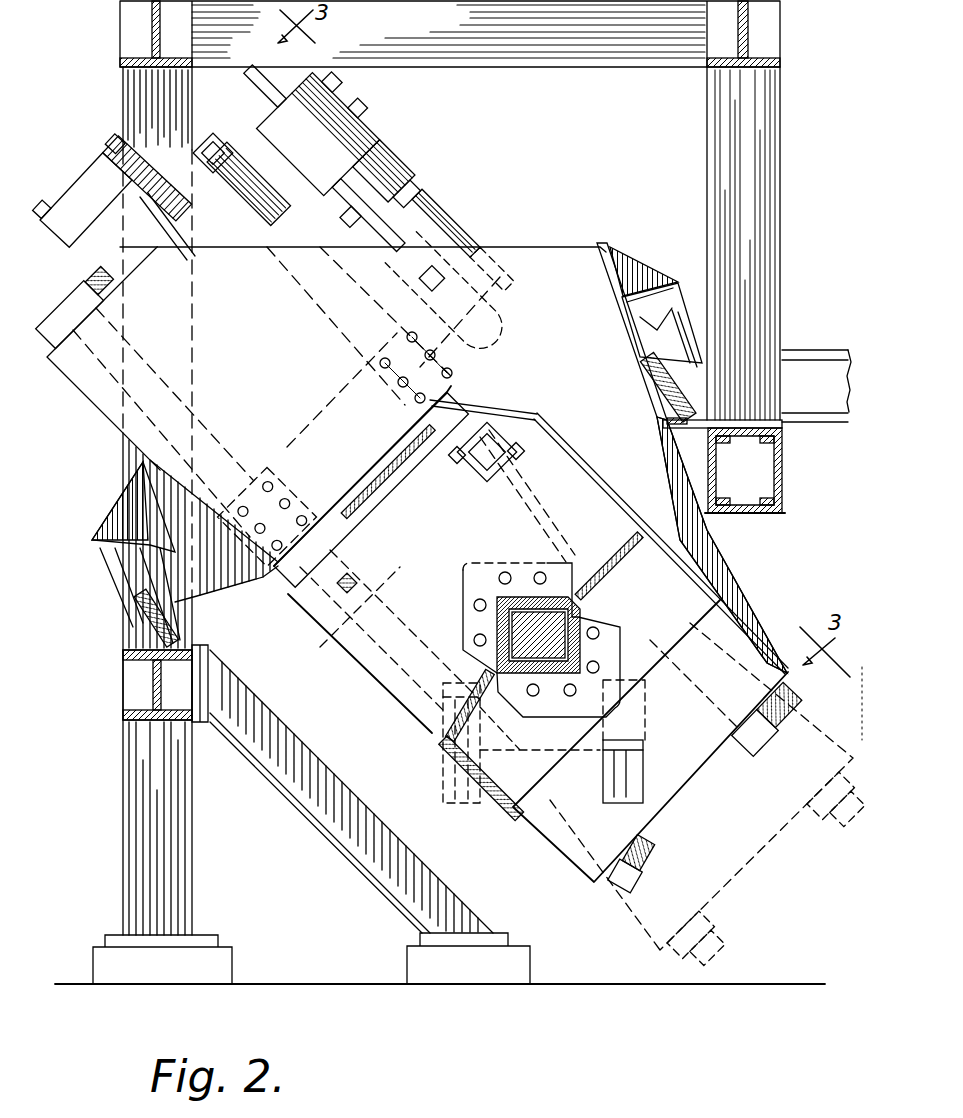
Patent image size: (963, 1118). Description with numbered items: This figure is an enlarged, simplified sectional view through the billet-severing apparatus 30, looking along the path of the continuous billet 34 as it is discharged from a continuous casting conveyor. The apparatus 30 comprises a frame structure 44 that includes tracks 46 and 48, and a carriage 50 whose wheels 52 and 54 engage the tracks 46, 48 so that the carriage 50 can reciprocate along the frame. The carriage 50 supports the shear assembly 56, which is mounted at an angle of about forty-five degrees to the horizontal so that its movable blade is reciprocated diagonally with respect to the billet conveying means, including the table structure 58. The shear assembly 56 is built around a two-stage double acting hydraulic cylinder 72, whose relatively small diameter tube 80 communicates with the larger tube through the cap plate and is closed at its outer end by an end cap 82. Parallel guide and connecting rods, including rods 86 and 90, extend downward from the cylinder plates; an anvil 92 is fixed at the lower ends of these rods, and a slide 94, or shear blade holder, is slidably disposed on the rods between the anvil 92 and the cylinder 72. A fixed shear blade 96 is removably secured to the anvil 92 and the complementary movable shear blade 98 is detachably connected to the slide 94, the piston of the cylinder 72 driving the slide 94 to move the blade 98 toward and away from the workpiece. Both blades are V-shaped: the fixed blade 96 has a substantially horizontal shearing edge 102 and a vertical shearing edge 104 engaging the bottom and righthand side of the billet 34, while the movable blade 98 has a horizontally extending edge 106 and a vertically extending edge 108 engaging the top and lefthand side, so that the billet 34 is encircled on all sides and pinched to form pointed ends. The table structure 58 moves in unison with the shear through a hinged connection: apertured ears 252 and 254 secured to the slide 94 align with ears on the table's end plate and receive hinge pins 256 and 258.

The apparatus 30 is at (797, 49).
The frame structure 44 is at (793, 168).
The track 46 is at (140, 655).
The track 48 is at (685, 430).
The carriage 50 is at (587, 235).
The wheel 52 is at (133, 627).
The wheel 54 is at (665, 325).
The shear assembly 56 is at (401, 140).
The table structure 58 is at (440, 773).
The two-stage double acting hydraulic cylinder 72 is at (70, 270).
The small diameter tube 80 is at (127, 190).
The end cap 82 is at (90, 196).
The guide and connecting rod 86 is at (640, 886).
The guide and connecting rod 90 is at (775, 737).
The anvil 92 is at (562, 850).
The slide 94 is at (352, 675).
The fixed shear blade 96 is at (706, 610).
The movable shear blade 98 is at (562, 595).
The horizontal shearing edge 102 is at (553, 662).
The vertical shearing edge 104 is at (712, 586).
The horizontally extending edge 106 is at (548, 600).
The vertically extending edge 108 is at (497, 618).
The billet 34 is at (510, 655).
The apertured ear 252 is at (303, 606).
The apertured ear 254 is at (500, 397).
The hinge pin 256 is at (330, 636).
The hinge pin 258 is at (522, 414).